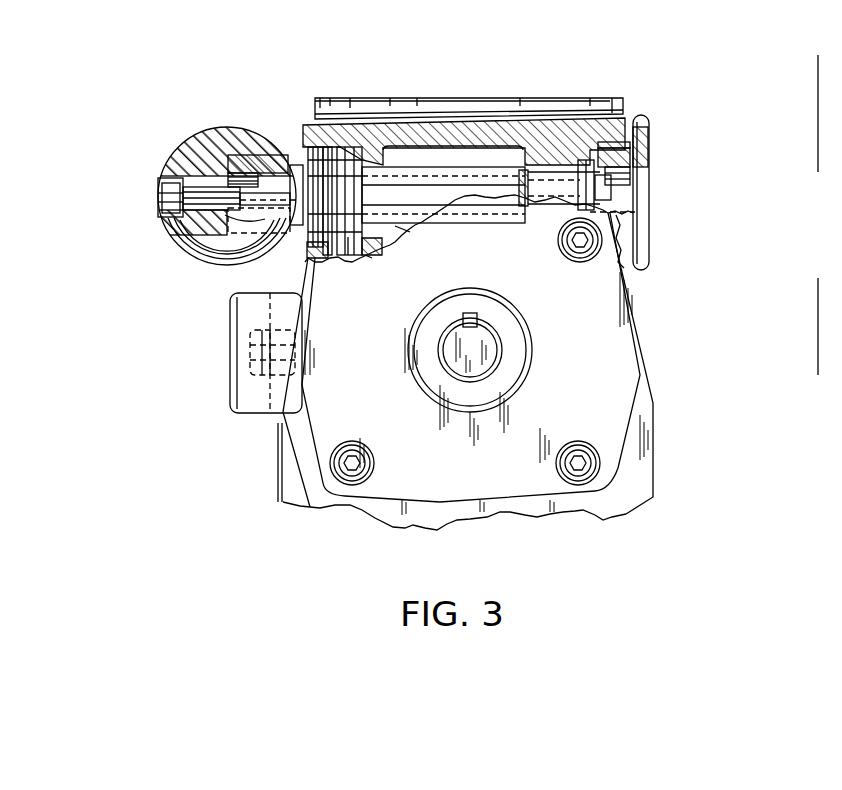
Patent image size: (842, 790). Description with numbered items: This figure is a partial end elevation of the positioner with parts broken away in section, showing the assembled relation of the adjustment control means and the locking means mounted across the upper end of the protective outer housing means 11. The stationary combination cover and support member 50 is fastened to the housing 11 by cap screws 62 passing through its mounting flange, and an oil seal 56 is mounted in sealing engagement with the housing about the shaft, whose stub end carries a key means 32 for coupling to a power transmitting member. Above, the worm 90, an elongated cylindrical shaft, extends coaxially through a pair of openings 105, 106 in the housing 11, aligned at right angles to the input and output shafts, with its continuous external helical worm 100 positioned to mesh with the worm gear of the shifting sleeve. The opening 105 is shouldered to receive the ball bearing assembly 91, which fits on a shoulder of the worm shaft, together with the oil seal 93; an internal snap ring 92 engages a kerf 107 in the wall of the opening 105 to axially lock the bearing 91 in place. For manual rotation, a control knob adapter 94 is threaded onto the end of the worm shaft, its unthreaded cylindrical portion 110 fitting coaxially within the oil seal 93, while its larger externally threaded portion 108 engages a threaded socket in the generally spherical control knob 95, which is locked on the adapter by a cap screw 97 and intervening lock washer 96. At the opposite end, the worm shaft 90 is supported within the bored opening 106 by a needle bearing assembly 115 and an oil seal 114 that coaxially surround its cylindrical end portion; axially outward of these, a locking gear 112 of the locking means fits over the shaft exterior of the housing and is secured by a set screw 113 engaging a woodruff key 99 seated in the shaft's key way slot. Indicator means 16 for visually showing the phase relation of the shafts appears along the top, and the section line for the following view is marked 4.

The section line 4- 4 is at (818, 63).
The protective outer housing means 11 is at (670, 390).
The indicator means 16 is at (592, 93).
The key means 32 is at (476, 318).
The combination cover and support member 50 is at (607, 372).
The oil seal 56 is at (508, 362).
The cap screw 62 is at (364, 458).
The worm 90 is at (424, 197).
The ball bearing assembly 91 is at (372, 255).
The internal snap ring 92 is at (348, 237).
The oil seal 93 is at (265, 220).
The control knob adapter 94 is at (296, 158).
The control knob 95 is at (180, 262).
The lock washer 96 is at (203, 208).
The cap screw 97 is at (158, 205).
The woodruff key 99 is at (637, 185).
The external helical worm 100 is at (395, 228).
The opening 105 is at (304, 254).
The opening 106 is at (585, 208).
The kerf 107 is at (353, 148).
The externally threaded portion 108 is at (270, 153).
The unthreaded cylindrical portion 110 is at (318, 150).
The locking gear 112 is at (664, 240).
The set screw 113 is at (648, 165).
The oil seal 114 is at (594, 200).
The needle bearing assembly 115 is at (524, 207).